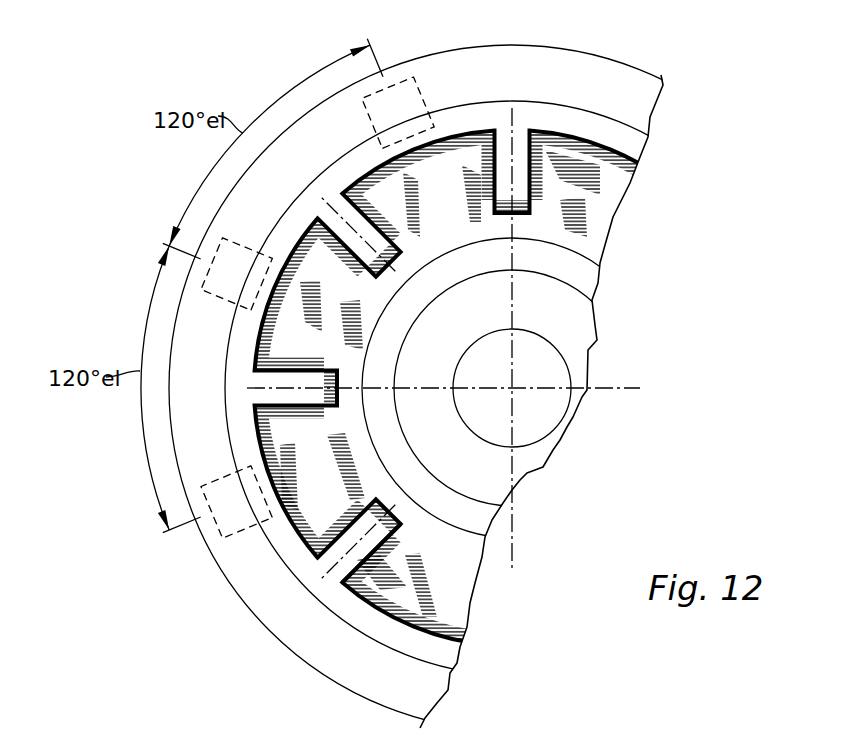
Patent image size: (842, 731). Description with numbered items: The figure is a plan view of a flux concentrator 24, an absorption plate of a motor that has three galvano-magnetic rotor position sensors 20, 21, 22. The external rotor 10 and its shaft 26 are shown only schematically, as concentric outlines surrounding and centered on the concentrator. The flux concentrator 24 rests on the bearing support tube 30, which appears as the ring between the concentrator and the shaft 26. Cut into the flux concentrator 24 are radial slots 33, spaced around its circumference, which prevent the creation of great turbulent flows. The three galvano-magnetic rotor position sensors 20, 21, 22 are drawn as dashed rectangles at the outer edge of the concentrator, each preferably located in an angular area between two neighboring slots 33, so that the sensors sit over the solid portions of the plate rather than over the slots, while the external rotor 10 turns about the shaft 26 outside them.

The external rotor 10 is at (295, 622).
The galvano-magnetic rotor position sensor 20 is at (222, 539).
The galvano-magnetic rotor position sensor 21 is at (201, 289).
The galvano-magnetic rotor position sensor 22 is at (400, 78).
The flux concentrator 24 is at (433, 605).
The shaft 26 is at (553, 410).
The bearing support tube 30 is at (475, 513).
The radial slot 33 is at (392, 533).